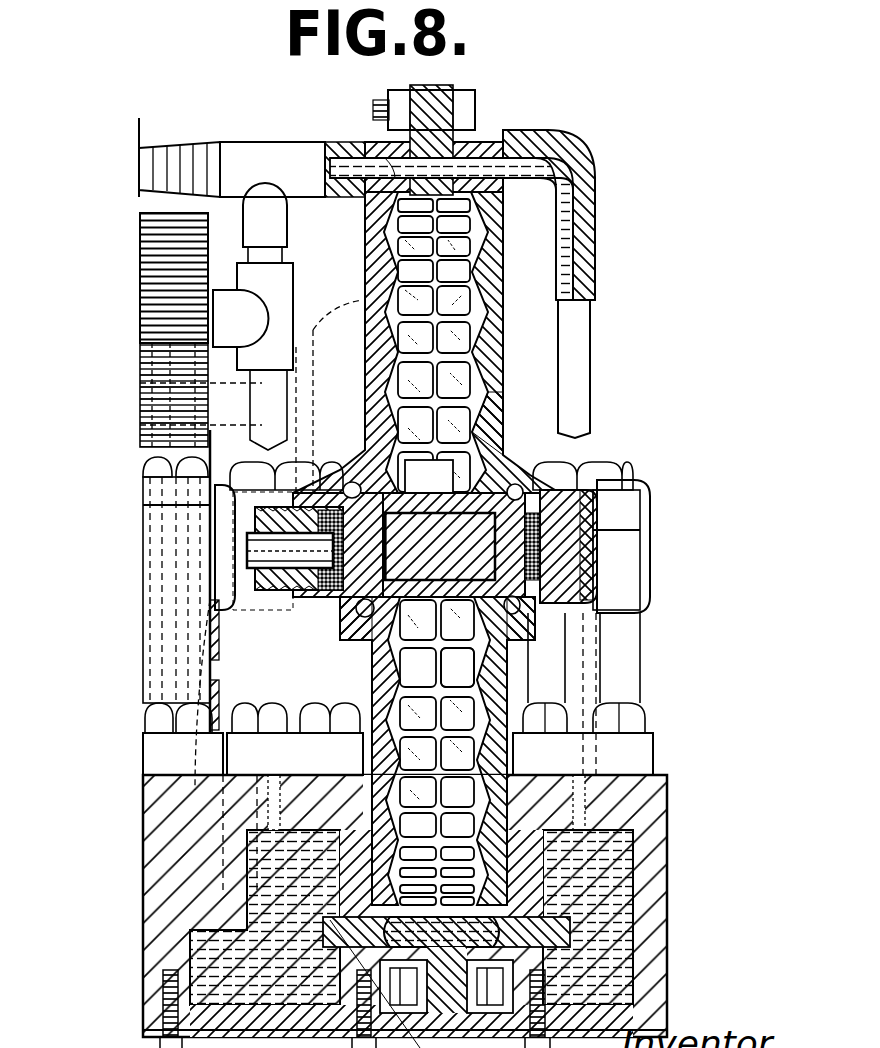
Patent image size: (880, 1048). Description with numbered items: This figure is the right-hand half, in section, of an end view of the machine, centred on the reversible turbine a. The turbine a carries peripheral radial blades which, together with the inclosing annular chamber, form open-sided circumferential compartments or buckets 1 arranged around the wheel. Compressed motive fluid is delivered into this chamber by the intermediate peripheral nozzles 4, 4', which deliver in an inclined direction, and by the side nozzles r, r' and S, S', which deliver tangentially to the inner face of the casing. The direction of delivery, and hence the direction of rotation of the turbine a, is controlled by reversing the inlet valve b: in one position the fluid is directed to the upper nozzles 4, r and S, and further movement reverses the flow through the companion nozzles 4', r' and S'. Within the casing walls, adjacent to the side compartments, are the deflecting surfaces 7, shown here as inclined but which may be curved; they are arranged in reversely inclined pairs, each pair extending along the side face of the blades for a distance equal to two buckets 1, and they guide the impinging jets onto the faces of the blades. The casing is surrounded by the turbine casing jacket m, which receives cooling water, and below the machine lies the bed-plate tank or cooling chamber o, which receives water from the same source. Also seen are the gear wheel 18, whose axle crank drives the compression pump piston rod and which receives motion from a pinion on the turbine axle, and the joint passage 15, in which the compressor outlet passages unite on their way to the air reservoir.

The gear wheel 18 is at (140, 270).
The turbine casing jacket m is at (462, 158).
The turbine a is at (555, 359).
The deflecting surfaces 7 is at (372, 378).
The buckets 1 is at (436, 552).
The central delivery nozzle 4 is at (502, 421).
The central delivery nozzle 4' is at (457, 667).
The side delivery nozzle S is at (319, 507).
The side delivery nozzle S' is at (352, 647).
The side delivery nozzle r is at (470, 517).
The side delivery nozzle r' is at (527, 630).
The inlet valve b is at (600, 540).
The joint passage 15 is at (268, 785).
The bed-plate tank or cooling chamber o is at (630, 905).